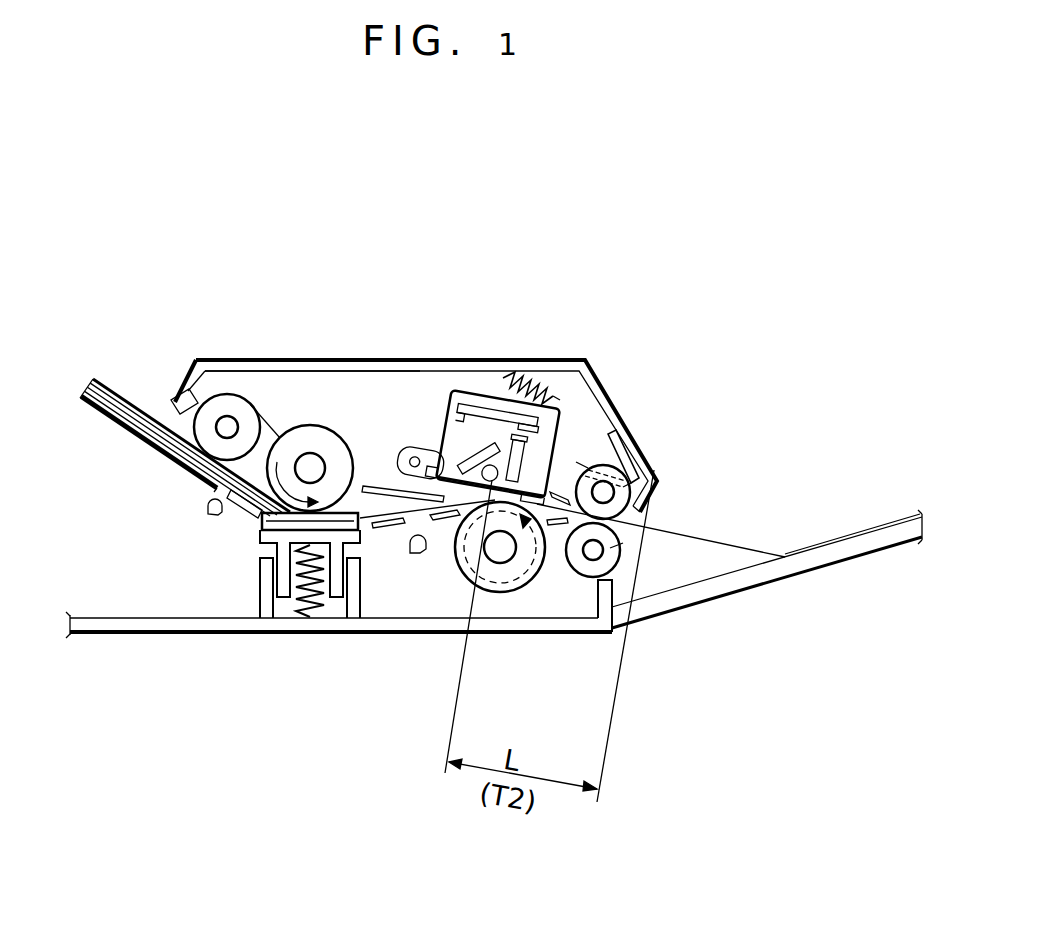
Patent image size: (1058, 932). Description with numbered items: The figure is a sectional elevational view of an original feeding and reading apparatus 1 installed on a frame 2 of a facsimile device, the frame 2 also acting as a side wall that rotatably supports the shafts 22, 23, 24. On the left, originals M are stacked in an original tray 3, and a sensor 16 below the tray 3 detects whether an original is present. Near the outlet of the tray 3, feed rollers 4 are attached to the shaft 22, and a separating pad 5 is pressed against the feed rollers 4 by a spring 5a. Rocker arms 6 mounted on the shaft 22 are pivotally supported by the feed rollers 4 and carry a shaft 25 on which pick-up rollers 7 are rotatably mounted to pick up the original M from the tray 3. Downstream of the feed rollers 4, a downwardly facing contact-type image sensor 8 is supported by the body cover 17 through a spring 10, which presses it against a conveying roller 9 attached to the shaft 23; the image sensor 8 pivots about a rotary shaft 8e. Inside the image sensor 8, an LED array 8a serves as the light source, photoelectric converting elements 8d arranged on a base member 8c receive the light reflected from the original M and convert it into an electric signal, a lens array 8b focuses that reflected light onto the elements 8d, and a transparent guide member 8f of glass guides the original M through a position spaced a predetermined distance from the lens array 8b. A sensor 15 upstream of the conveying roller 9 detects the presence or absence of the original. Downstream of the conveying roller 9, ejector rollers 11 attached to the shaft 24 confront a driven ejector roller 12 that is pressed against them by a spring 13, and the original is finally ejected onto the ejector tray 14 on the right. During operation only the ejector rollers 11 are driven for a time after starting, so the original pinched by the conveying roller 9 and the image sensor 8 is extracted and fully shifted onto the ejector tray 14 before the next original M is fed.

The original feeding and reading apparatus 1 is at (572, 258).
The frame 2 is at (342, 622).
The original tray 3 is at (136, 440).
The feed rollers 4 is at (311, 426).
The separating pad 5 is at (262, 524).
The spring 5a is at (302, 602).
The rocker arms 6 is at (259, 371).
The pick-up rollers 7 is at (207, 412).
The image sensor 8 is at (463, 402).
The LED array 8a is at (468, 485).
The lens array 8b is at (557, 438).
The base member 8c is at (483, 418).
The photoelectric converting elements 8d is at (515, 455).
The rotary shaft 8e is at (409, 448).
The transparent guide member 8f is at (450, 489).
The conveying roller 9 is at (513, 575).
The spring 10 is at (527, 376).
The ejector rollers 11 is at (644, 530).
The driven ejector roller 12 is at (607, 476).
The spring 13 is at (585, 462).
The ejector tray 14 is at (673, 609).
The sensor 15 is at (414, 556).
The sensor 16 is at (206, 516).
The body cover 17 is at (545, 400).
The shaft 22 is at (318, 462).
The shaft 23 is at (498, 552).
The shaft 24 is at (593, 555).
The shaft 25 is at (226, 418).
The original M is at (112, 388).